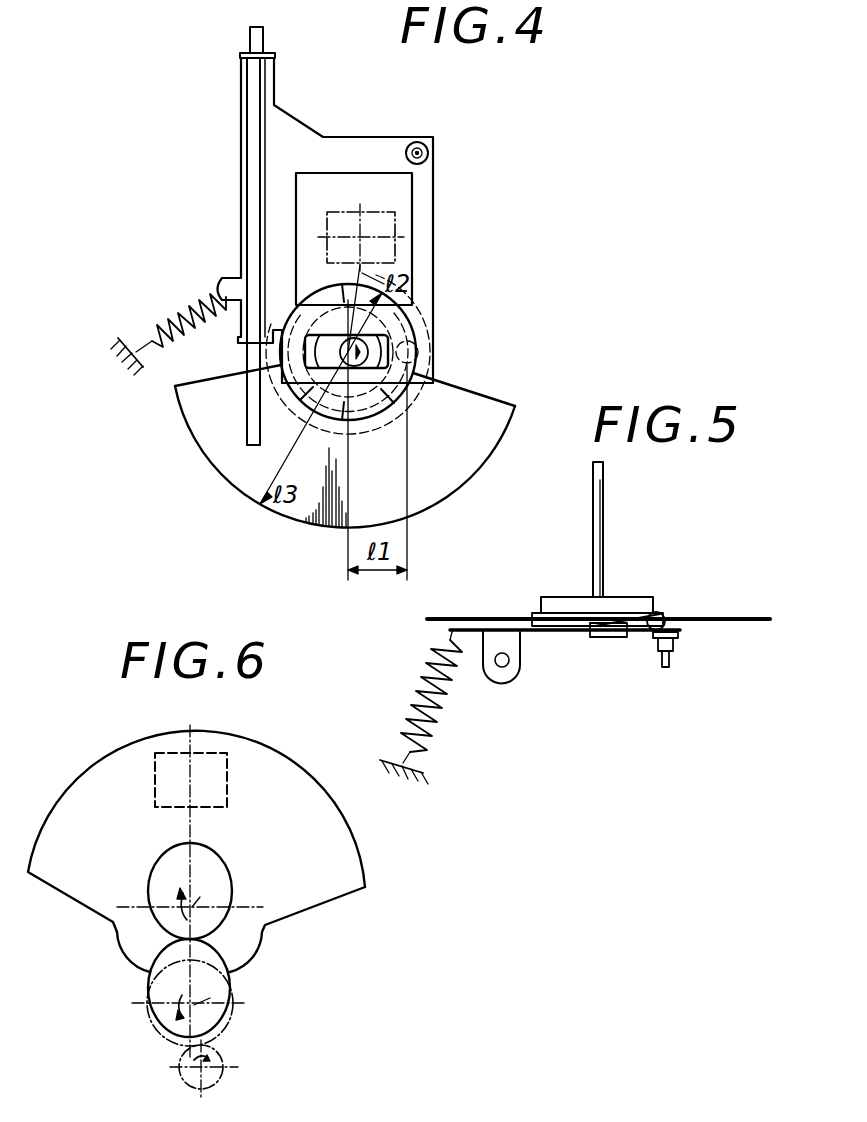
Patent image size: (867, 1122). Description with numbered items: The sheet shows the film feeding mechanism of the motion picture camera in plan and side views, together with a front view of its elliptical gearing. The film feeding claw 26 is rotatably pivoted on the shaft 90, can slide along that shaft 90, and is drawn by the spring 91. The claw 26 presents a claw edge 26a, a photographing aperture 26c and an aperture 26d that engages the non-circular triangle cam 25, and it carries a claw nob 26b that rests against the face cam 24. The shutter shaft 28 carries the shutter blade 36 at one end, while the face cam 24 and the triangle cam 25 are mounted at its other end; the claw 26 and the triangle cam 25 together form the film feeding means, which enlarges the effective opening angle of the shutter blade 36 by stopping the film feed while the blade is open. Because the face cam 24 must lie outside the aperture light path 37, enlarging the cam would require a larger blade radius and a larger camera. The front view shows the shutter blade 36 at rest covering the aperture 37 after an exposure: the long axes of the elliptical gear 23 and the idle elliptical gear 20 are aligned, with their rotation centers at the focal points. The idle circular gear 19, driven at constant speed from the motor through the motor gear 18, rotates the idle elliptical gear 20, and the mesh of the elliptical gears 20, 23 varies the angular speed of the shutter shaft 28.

In FIG. 4, the shaft 90 is at (263, 38).
In FIG. 5, the shaft 90 is at (498, 668).
In FIG. 4, the spring 91 is at (163, 306).
In FIG. 5, the spring 91 is at (420, 692).
In FIG. 4, the film feeding claw 26 is at (348, 140).
In FIG. 5, the film feeding claw 26 is at (553, 632).
In FIG. 4, the claw edge 26a is at (430, 148).
In FIG. 5, the claw edge 26a is at (670, 660).
In FIG. 4, the claw nob 26b is at (418, 352).
In FIG. 5, the claw nob 26b is at (660, 614).
In FIG. 4, the photographing aperture 26c is at (405, 203).
In FIG. 4, the aperture 26d is at (303, 385).
In FIG. 4, the aperture light path 37 is at (398, 233).
In FIG. 6, the aperture light path 37 is at (228, 760).
In FIG. 4, the face cam 24 is at (392, 296).
In FIG. 5, the face cam 24 is at (535, 617).
In FIG. 4, the triangle cam 25 is at (390, 334).
In FIG. 5, the triangle cam 25 is at (607, 638).
In FIG. 4, the elliptical gear 23 is at (398, 432).
In FIG. 5, the elliptical gear 23 is at (622, 597).
In FIG. 6, the elliptical gear 23 is at (225, 865).
In FIG. 4, the shutter blade 36 is at (495, 410).
In FIG. 5, the shutter blade 36 is at (742, 617).
In FIG. 6, the shutter blade 36 is at (360, 845).
In FIG. 5, the shutter shaft 28 is at (593, 500).
In FIG. 6, the idle elliptical gear 20 is at (215, 955).
In FIG. 6, the idle circular gear 19 is at (232, 1018).
In FIG. 6, the motor gear 18 is at (223, 1078).